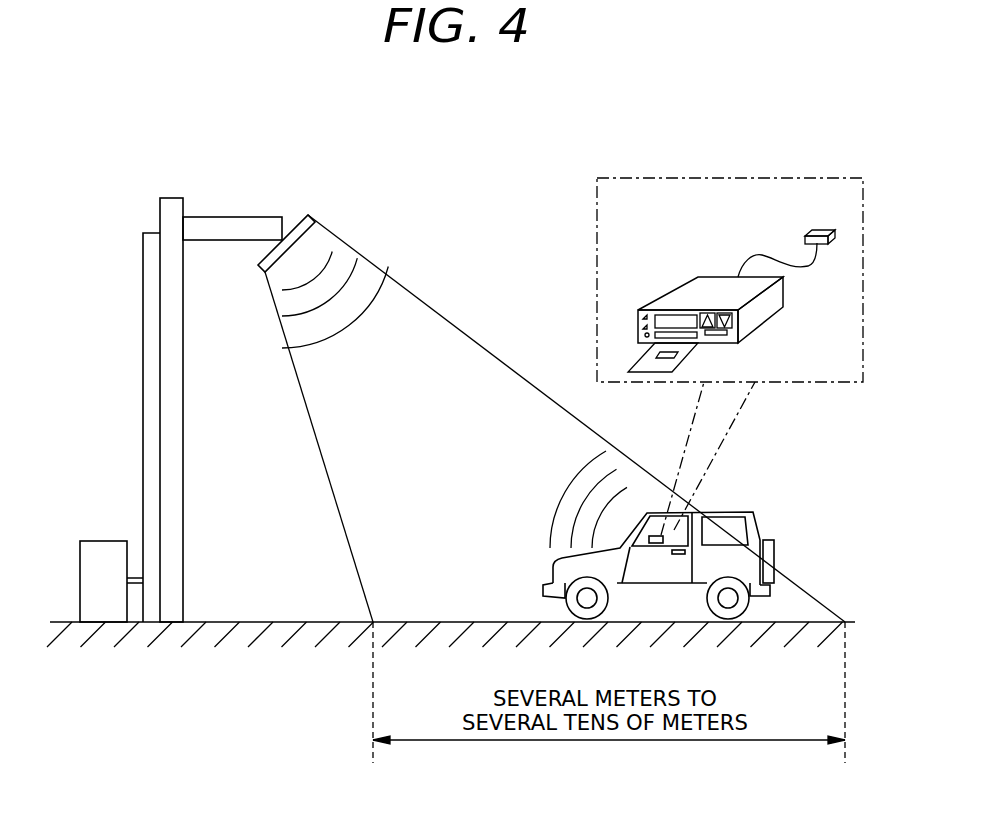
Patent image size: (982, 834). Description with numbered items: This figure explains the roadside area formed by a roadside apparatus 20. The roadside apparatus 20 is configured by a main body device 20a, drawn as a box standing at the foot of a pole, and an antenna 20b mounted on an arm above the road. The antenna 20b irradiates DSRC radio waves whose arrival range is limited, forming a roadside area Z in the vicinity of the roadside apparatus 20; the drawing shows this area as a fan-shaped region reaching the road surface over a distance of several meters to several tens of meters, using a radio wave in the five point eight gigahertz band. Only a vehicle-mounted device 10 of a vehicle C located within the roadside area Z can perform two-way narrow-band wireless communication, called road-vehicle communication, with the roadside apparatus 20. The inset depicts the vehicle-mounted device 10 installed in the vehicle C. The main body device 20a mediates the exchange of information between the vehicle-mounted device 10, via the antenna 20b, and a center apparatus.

The roadside apparatus 20 is at (125, 126).
The main body device 20a is at (102, 541).
The antenna 20b is at (298, 218).
The vehicle-mounted device 10 is at (678, 280).
The roadside area Z is at (457, 328).
The vehicle C is at (757, 520).